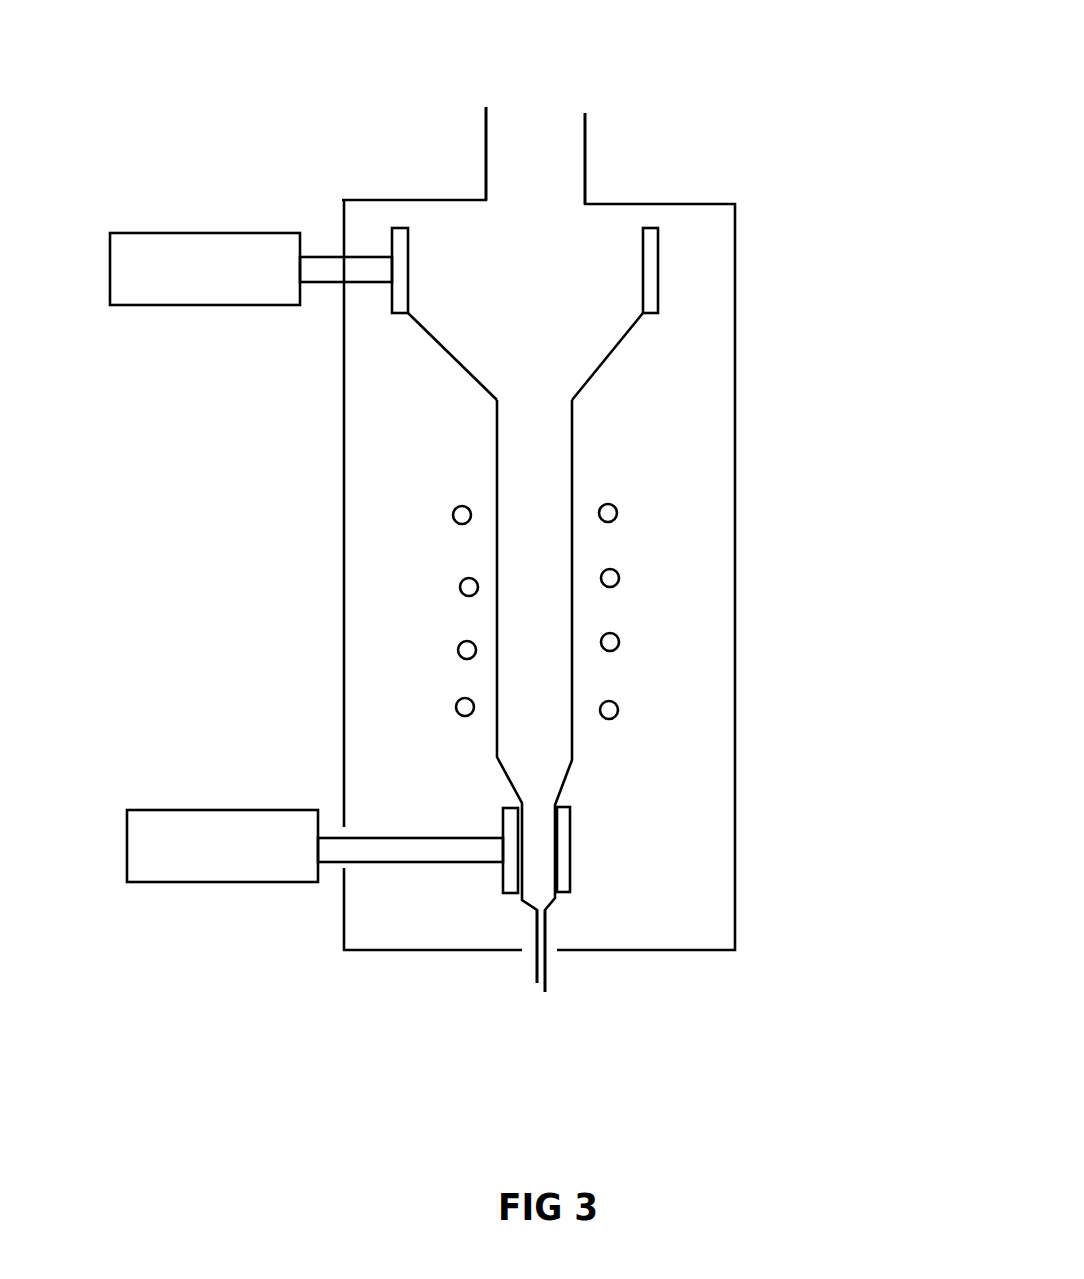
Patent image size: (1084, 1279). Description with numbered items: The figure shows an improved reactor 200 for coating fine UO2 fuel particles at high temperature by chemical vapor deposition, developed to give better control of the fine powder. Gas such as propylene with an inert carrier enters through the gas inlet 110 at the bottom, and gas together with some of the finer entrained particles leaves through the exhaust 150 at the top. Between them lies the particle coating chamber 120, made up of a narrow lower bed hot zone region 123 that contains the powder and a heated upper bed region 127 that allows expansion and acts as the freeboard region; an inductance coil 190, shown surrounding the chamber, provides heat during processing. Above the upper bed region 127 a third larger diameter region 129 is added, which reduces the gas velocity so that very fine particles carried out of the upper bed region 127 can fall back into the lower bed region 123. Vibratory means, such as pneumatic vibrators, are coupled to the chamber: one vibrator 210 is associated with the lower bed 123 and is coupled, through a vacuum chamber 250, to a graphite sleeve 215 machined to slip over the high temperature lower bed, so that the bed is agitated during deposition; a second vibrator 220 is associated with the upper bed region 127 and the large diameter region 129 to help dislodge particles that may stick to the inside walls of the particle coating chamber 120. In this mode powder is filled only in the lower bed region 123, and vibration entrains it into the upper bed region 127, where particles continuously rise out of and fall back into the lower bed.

The improved reactor 200 is at (343, 92).
The exhaust 150 is at (552, 168).
The particle coating chamber 120 is at (375, 612).
The third larger diameter region 129 is at (563, 313).
The upper bed region 127 is at (530, 683).
The inductance coil 190 is at (617, 520).
The lower bed hot zone region 123 is at (535, 867).
The gas inlet 110 is at (547, 980).
The second vibrator 220 is at (227, 310).
The vibrator 210 is at (238, 807).
The vacuum chamber 250 is at (375, 867).
The graphite sleeve 215 is at (500, 877).